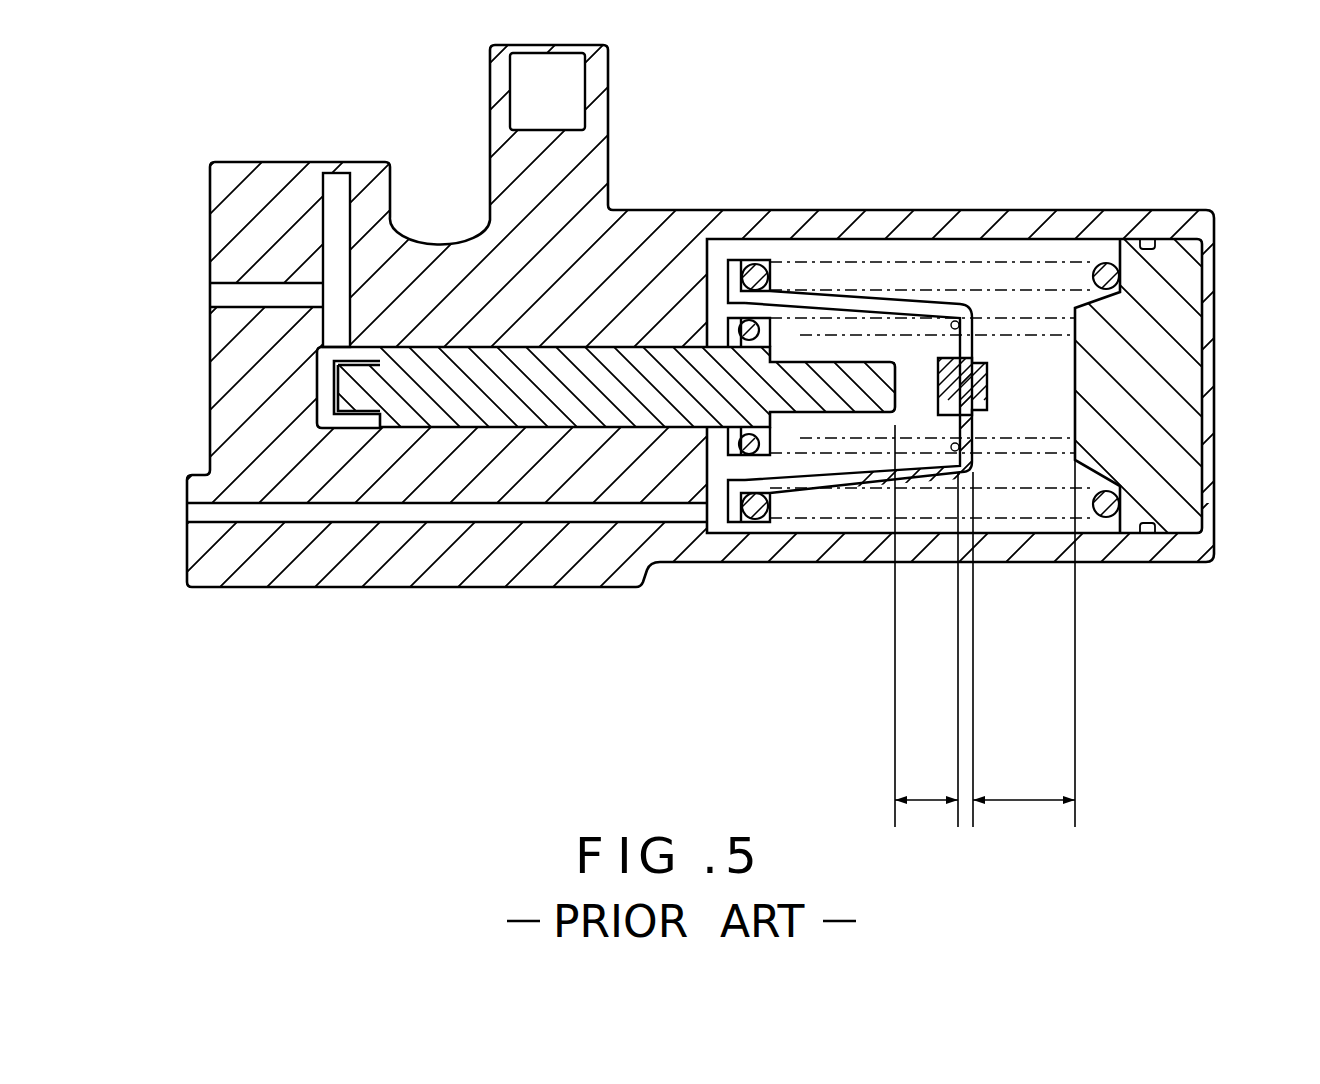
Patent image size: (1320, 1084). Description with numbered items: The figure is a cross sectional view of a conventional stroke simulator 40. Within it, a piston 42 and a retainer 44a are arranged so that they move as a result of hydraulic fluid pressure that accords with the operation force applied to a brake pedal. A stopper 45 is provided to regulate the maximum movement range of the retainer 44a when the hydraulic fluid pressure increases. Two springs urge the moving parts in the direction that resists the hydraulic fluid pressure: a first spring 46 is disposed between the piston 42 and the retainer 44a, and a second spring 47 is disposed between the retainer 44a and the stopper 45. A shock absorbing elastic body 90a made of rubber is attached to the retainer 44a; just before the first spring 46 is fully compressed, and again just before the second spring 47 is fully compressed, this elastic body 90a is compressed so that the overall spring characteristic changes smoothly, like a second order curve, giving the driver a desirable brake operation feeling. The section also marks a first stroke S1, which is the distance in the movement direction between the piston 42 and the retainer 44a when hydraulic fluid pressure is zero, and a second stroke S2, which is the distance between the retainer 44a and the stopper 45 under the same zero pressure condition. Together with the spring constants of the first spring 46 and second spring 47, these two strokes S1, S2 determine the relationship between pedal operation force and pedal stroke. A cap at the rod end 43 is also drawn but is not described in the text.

The stroke simulator 40 is at (982, 172).
The piston 42 is at (449, 373).
The end cap on rod 43 is at (327, 378).
The retainer 44a is at (807, 477).
The stopper 45 is at (1167, 378).
The first spring 46 is at (740, 449).
The second spring 47 is at (755, 519).
The shock absorbing elastic body 90a is at (935, 360).
The first stroke S1 is at (926, 626).
The second stroke S2 is at (1024, 643).